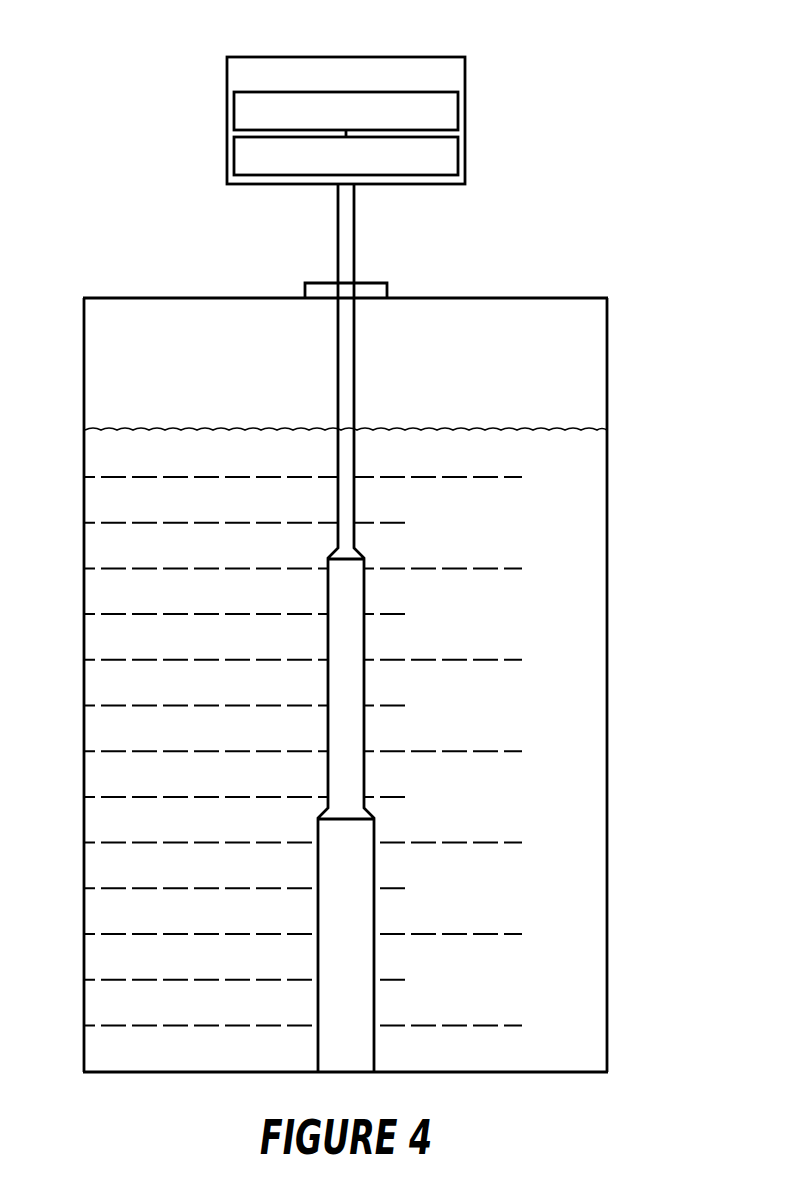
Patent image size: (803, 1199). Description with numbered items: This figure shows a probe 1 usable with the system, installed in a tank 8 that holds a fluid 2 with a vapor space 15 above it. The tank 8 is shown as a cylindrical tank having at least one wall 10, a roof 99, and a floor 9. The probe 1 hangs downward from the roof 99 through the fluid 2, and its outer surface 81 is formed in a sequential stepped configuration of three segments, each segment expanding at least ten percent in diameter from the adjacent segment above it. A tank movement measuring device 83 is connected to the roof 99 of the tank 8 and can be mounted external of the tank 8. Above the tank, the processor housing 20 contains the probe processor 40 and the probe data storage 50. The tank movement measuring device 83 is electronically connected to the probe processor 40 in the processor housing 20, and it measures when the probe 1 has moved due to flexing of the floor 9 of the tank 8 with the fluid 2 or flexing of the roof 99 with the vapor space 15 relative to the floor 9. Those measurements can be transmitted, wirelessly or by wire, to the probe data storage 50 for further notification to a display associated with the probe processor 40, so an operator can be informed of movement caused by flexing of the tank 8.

The probe 1 is at (341, 41).
The processor housing 20 is at (466, 76).
The probe processor 40 is at (459, 111).
The probe data storage 50 is at (459, 157).
The outer surface 81 is at (366, 641).
The tank movement measuring device 83 is at (387, 285).
The tank 8 is at (645, 297).
The wall 10 is at (83, 330).
The roof 99 is at (163, 298).
The floor 9 is at (187, 1074).
The vapor space 15 is at (564, 372).
The fluid 2 is at (113, 430).